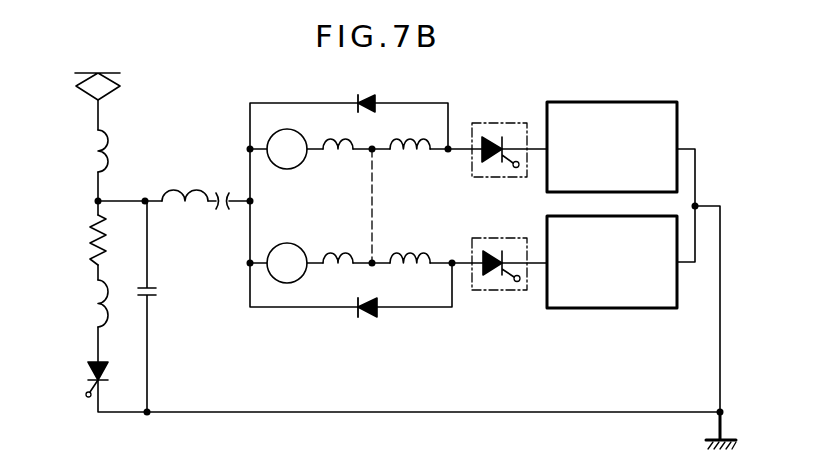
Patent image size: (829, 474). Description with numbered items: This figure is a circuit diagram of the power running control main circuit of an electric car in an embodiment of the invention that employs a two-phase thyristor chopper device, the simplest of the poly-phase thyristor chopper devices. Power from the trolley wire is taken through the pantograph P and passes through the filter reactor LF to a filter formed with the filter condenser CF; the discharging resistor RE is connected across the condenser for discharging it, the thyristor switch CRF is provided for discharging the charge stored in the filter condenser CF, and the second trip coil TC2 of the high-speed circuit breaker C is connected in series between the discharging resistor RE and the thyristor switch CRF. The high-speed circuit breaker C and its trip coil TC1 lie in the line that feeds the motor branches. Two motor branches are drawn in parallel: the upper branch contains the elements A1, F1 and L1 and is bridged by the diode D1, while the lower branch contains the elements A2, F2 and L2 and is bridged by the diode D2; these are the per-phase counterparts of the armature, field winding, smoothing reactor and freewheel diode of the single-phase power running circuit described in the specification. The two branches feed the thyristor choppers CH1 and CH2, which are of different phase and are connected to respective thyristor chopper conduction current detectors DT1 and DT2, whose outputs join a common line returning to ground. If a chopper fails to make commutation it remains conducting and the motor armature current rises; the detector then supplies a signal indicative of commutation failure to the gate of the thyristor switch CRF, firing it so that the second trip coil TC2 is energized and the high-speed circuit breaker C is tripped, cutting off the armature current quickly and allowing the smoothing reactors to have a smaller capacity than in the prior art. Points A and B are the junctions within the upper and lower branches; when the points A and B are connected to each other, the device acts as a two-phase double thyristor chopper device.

The pantograph P is at (125, 84).
The filter reactor LF is at (122, 152).
The high-speed circuit breaker C is at (220, 190).
The trip coil TC1 is at (187, 210).
The discharging resistor RE is at (91, 243).
The second trip coil TC2 is at (98, 304).
The filter condenser CF is at (157, 290).
The thyristor switch CRF is at (91, 369).
The amplifier 1 A1 is at (296, 171).
The filter coil 1 F1 is at (342, 157).
The point A is at (376, 138).
The inductor 1 L1 is at (419, 157).
The diode 1 D1 is at (366, 97).
The amplifier 2 A2 is at (297, 227).
The filter coil 2 F2 is at (350, 243).
The point B is at (378, 253).
The inductor 2 L2 is at (414, 250).
The diode 2 D2 is at (365, 320).
The thyristor chopper CH1 is at (476, 98).
The thyristor chopper CH2 is at (470, 288).
The thyristor chopper conduction current detector DT1 is at (592, 103).
The thyristor chopper conduction current detector DT2 is at (575, 311).